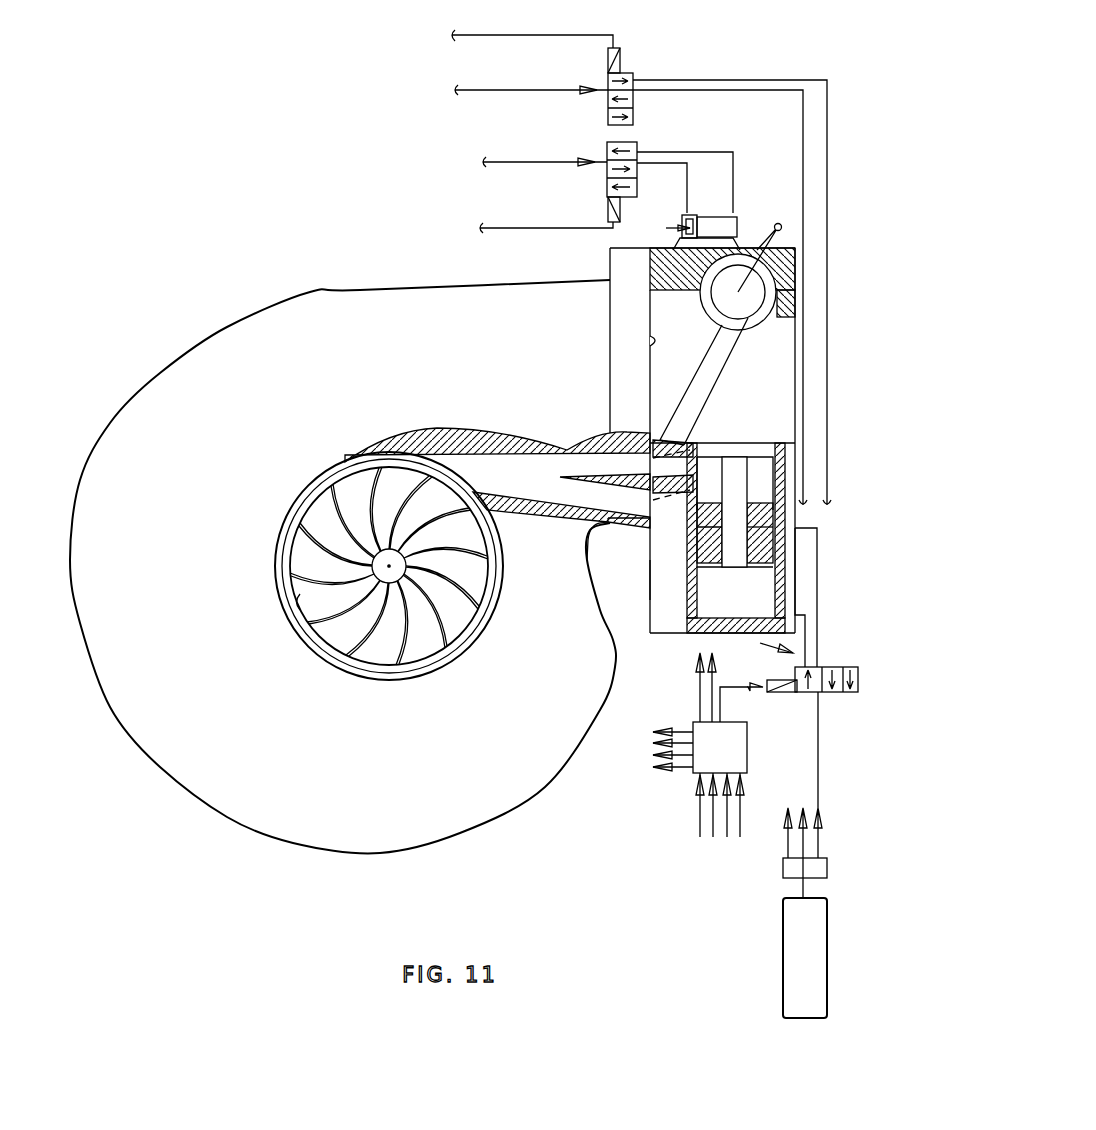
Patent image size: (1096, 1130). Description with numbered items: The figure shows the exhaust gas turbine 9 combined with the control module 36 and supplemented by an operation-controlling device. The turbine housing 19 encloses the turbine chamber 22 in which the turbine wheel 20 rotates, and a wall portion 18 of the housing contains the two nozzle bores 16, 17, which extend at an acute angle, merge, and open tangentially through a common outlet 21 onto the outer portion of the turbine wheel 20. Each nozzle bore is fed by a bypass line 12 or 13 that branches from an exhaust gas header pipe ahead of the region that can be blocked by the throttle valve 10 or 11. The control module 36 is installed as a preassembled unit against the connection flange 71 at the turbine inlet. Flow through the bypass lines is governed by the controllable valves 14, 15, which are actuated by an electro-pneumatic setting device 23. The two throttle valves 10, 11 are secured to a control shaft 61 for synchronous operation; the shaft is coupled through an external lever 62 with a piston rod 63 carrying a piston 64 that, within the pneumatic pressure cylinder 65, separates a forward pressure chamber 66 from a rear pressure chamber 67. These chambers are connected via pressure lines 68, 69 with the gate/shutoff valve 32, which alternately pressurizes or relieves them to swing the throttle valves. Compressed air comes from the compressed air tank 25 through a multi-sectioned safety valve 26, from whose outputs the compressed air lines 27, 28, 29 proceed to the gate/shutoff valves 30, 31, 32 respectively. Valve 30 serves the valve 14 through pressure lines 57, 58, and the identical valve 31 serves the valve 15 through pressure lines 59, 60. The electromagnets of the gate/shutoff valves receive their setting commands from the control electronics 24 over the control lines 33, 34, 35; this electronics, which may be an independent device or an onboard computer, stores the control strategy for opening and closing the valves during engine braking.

The exhaust gas turbine 9 is at (178, 340).
The turbine housing 19 is at (150, 768).
The turbine wheel 20 is at (403, 632).
The turbine chamber 22 is at (305, 603).
The common outlet 21 is at (452, 478).
The wall portion 18 is at (530, 505).
The nozzle bore 17 is at (583, 495).
The nozzle bore 16 is at (590, 470).
The bypass line 13 is at (667, 503).
The bypass line 12 is at (655, 448).
The connection flange 71 is at (650, 340).
The control shaft 61 is at (722, 297).
The lever 62 is at (763, 317).
The throttle valve 10 is at (715, 380).
The throttle valve 11 is at (716, 381).
The piston rod 63 is at (775, 233).
The piston 64 is at (700, 215).
The pneumatic pressure cylinder 65 is at (663, 229).
The forward pressure chamber 66 is at (690, 217).
The rear pressure chamber 67 is at (720, 222).
The pressure line 68 is at (667, 160).
The pressure line 69 is at (713, 148).
The controllable valve 14 is at (727, 455).
The controllable valve 15 is at (753, 530).
The control module 36 is at (650, 578).
The pressure line 58 is at (807, 647).
The pressure line 57 is at (818, 590).
The electro-pneumatic setting device 23 is at (761, 649).
The gate/shutoff valve 30 is at (838, 692).
The control line 33 is at (733, 692).
The control electronics 24 is at (710, 761).
The control line 34 is at (525, 37).
The control line 35 is at (553, 228).
The compressed air line 28 is at (512, 88).
The compressed air line 29 is at (528, 163).
The compressed air line 27 is at (818, 767).
The multi-sectioned safety valve 26 is at (827, 868).
The compressed air tank 25 is at (800, 960).
The gate/shutoff valve 31 is at (633, 110).
The gate/shutoff valve 32 is at (637, 178).
The pressure line 59 is at (697, 90).
The pressure line 60 is at (740, 80).